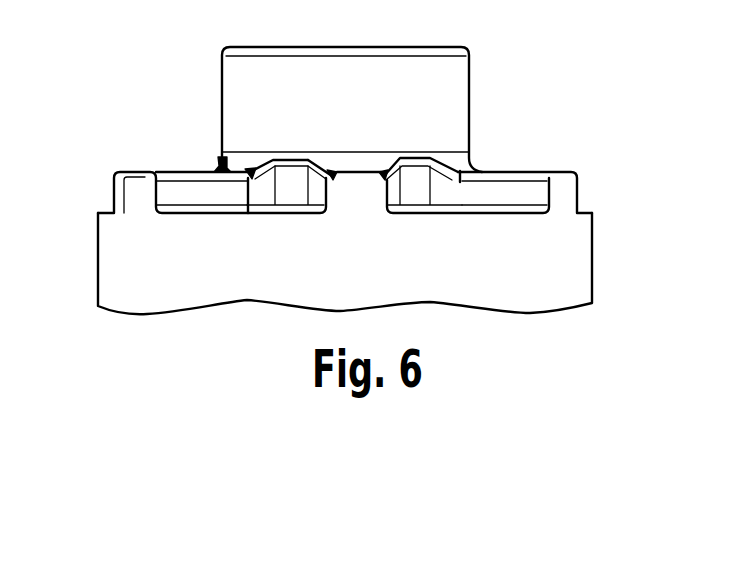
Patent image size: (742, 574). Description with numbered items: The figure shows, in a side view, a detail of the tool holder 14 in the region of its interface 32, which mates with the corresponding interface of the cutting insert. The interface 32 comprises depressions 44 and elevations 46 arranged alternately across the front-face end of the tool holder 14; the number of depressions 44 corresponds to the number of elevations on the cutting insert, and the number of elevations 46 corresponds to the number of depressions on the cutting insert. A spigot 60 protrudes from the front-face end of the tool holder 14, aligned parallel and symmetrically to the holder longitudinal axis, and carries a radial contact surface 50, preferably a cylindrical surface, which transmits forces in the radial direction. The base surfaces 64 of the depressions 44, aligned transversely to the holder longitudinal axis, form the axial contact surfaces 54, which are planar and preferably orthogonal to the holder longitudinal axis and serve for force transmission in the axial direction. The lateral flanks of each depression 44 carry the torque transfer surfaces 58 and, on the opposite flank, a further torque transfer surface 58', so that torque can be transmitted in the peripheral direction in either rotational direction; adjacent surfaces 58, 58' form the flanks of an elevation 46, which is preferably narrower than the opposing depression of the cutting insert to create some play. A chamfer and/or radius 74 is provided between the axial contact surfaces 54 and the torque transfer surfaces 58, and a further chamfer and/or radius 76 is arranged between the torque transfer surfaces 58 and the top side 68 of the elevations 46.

The tool holder 14 is at (630, 261).
The interface 32 is at (152, 80).
The depressions 44 is at (291, 180).
The elevations 46 is at (566, 193).
The radial contact surface 50 is at (482, 110).
The axial contact surfaces 54 is at (262, 203).
The torque transfer surfaces 58 is at (284, 238).
The further torque transfer surface 58' is at (507, 241).
The spigot 60 is at (443, 72).
The base surfaces 64 is at (354, 185).
The top side 68 is at (145, 160).
The chamfer and/or radius 74 is at (324, 215).
The chamfer and/or radius 76 is at (322, 158).